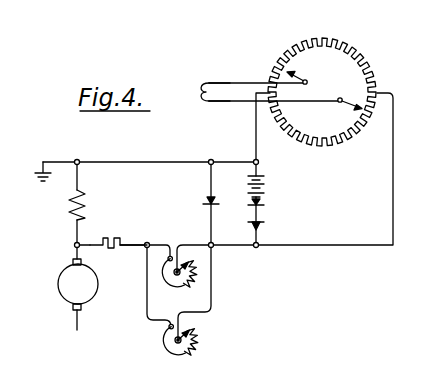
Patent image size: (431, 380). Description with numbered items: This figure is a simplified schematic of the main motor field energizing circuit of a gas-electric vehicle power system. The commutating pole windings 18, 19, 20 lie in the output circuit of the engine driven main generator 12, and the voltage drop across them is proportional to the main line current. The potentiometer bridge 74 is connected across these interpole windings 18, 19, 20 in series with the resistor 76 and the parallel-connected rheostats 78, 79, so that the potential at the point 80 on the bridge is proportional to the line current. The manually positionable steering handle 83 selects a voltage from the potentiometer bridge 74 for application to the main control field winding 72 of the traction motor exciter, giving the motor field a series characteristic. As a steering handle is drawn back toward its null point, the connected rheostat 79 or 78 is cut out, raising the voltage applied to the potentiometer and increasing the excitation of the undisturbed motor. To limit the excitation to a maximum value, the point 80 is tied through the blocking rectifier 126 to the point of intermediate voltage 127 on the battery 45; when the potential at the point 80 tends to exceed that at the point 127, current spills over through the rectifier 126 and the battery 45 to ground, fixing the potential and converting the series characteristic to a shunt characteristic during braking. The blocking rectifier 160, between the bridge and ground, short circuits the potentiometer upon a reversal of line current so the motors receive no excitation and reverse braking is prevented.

The potentiometer bridge 74 is at (327, 38).
The steering handle 83 is at (307, 79).
The point on potentiometer bridge 80 is at (382, 92).
The main control field winding 72 is at (205, 92).
The commutating pole winding 18 is at (112, 204).
The commutating pole winding 19 is at (112, 204).
The commutating pole winding 20 is at (86, 191).
The resistor 76 is at (112, 238).
The main generator 12 is at (78, 284).
The blocking rectifier 160 is at (206, 203).
The battery 45 is at (265, 190).
The point of intermediate voltage 127 is at (263, 205).
The blocking rectifier 126 is at (263, 226).
The variable resistor 79 is at (192, 287).
The variable resistor 78 is at (200, 342).